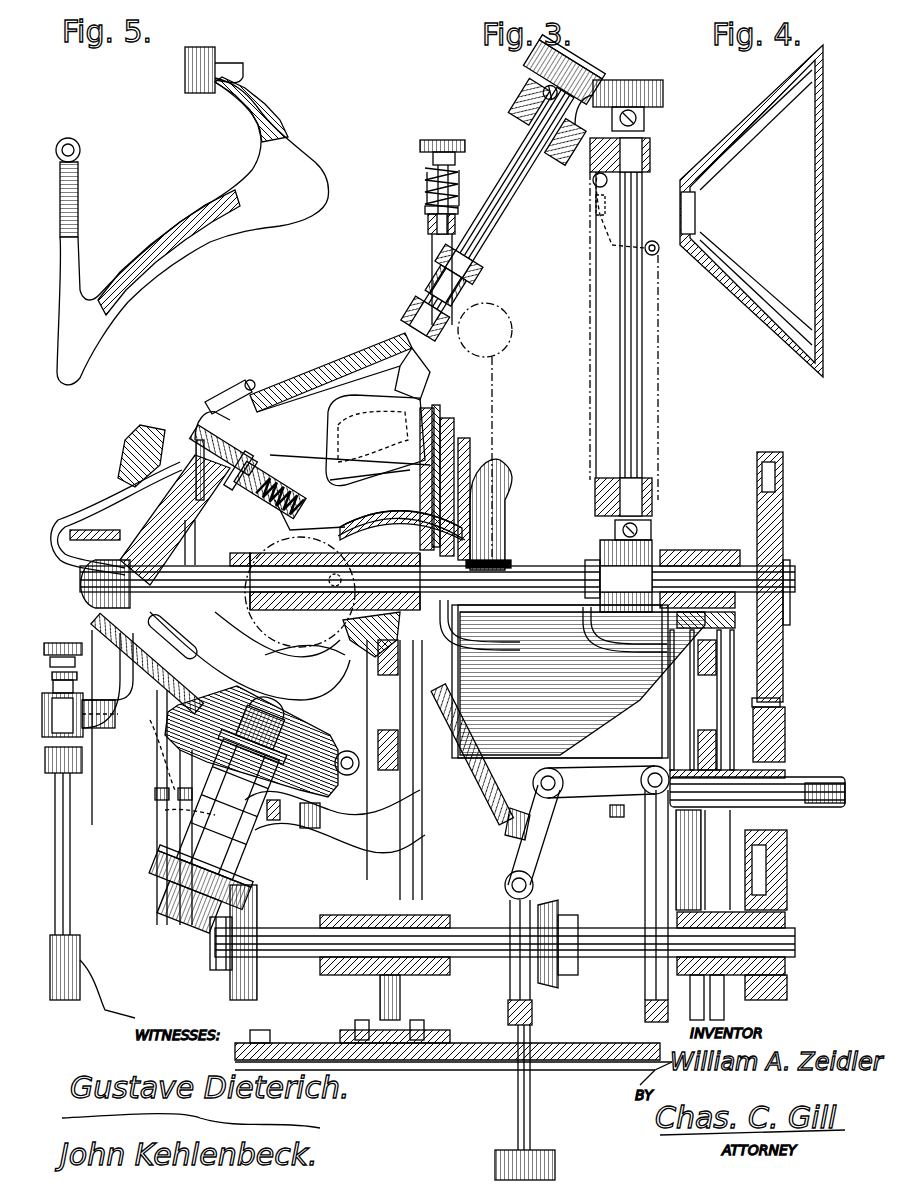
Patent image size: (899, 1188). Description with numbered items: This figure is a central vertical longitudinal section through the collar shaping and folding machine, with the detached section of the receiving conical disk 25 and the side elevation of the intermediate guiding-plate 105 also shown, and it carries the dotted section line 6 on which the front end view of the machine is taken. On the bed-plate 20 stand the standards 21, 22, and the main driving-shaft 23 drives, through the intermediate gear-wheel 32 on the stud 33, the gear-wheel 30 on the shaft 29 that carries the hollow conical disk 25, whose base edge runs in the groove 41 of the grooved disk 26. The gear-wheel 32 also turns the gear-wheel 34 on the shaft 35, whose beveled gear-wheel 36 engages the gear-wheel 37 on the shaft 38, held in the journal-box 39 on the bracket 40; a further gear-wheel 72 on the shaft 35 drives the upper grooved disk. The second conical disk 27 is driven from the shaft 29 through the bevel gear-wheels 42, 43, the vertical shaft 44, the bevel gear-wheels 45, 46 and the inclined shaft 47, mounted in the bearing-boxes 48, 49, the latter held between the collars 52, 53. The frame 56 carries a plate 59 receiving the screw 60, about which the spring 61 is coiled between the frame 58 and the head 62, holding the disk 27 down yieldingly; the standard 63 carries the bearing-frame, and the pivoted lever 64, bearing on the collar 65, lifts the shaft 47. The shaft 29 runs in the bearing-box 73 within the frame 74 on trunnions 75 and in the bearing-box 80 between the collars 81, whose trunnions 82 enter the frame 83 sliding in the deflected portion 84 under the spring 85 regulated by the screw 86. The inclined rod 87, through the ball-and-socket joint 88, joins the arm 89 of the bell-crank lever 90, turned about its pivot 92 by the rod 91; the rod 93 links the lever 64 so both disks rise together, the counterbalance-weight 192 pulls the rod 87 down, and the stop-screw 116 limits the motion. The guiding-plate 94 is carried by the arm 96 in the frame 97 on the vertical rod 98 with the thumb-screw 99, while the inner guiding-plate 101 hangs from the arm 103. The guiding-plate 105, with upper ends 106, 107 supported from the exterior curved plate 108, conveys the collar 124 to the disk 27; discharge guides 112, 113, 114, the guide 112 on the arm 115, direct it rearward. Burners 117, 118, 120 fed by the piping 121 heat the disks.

In FIG. 3, the bed-plate 20 is at (453, 1053).
In FIG. 3, the standard 21 is at (725, 1015).
In FIG. 3, the standard 22 is at (408, 998).
In FIG. 3, the main driving-shaft 23 is at (465, 820).
In FIG. 4, the conical disk 25 is at (751, 211).
In FIG. 3, the conical disk 25 is at (178, 487).
In FIG. 3, the grooved disk 26 is at (165, 740).
In FIG. 3, the conical disk 27 is at (340, 368).
In FIG. 3, the shaft 29 is at (535, 566).
In FIG. 3, the gear-wheel 30 is at (784, 512).
In FIG. 3, the gear-wheel 32 is at (788, 752).
In FIG. 3, the stud 33 is at (757, 788).
In FIG. 3, the gear-wheel 34 is at (790, 907).
In FIG. 3, the shaft 35 is at (620, 958).
In FIG. 3, the beveled gear-wheel 36 is at (262, 908).
In FIG. 3, the gear-wheel 37 is at (155, 862).
In FIG. 3, the shaft 38 is at (180, 905).
In FIG. 3, the journal-box 39 is at (165, 812).
In FIG. 3, the bracket 40 is at (335, 821).
In FIG. 3, the groove 41 is at (252, 756).
In FIG. 3, the bevel gear-wheel 42 is at (600, 548).
In FIG. 3, the bevel gear-wheel 43 is at (621, 529).
In FIG. 3, the vertical shaft 44 is at (621, 327).
In FIG. 3, the bevel gear-wheel 45 is at (663, 93).
In FIG. 3, the bevel gear-wheel 46 is at (548, 56).
In FIG. 3, the shaft 47 is at (505, 222).
In FIG. 3, the bearing-box 48 is at (556, 158).
In FIG. 3, the bearing-box 49 is at (478, 292).
In FIG. 3, the collar 52 is at (455, 333).
In FIG. 3, the collar 53 is at (495, 270).
In FIG. 3, the frame 56 is at (432, 250).
In FIG. 3, the frame 58 is at (428, 212).
In FIG. 3, the plate 59 is at (430, 230).
In FIG. 3, the screw 60 is at (425, 185).
In FIG. 3, the spring 61 is at (425, 198).
In FIG. 3, the head 62 is at (442, 144).
In FIG. 3, the standard 63 is at (590, 437).
In FIG. 3, the pivoted lever 64 is at (618, 208).
In FIG. 3, the collar 65 is at (529, 100).
In FIG. 3, the gear-wheel 72 is at (560, 910).
In FIG. 3, the bearing-box 73 is at (662, 548).
In FIG. 3, the frame 74 is at (718, 620).
In FIG. 3, the trunnions 75 is at (660, 622).
In FIG. 3, the bearing-box 80 is at (250, 656).
In FIG. 3, the collars 81 is at (328, 600).
In FIG. 3, the trunnions 82 is at (355, 570).
In FIG. 3, the frame 83 is at (345, 540).
In FIG. 3, the upper deflected portion 84 is at (280, 525).
In FIG. 3, the spring 85 is at (250, 505).
In FIG. 3, the screw 86 is at (240, 445).
In FIG. 3, the inclined rod 87 is at (490, 800).
In FIG. 3, the ball-and-socket joint 88 is at (512, 835).
In FIG. 3, the arm 89 is at (528, 863).
In FIG. 3, the bell-crank lever 90 is at (545, 828).
In FIG. 3, the rod 91 is at (645, 880).
In FIG. 3, the pivot 92 is at (555, 770).
In FIG. 3, the rod 93 is at (658, 255).
In FIG. 3, the guiding-plate 94 is at (165, 685).
In FIG. 3, the arm 96 is at (107, 680).
In FIG. 3, the frame 97 is at (84, 742).
In FIG. 3, the vertical rod 98 is at (76, 888).
In FIG. 3, the thumb-screw 99 is at (62, 698).
In FIG. 3, the inner guiding-plate 101 is at (375, 440).
In FIG. 3, the arm 103 is at (350, 472).
In FIG. 5, the guiding-plate 105 is at (236, 222).
In FIG. 5, the upper end 106 is at (85, 187).
In FIG. 3, the upper end 106 is at (201, 456).
In FIG. 5, the upper end 107 is at (219, 60).
In FIG. 3, the exterior curved plate 108 is at (455, 440).
In FIG. 3, the guide 112 is at (141, 447).
In FIG. 3, the guide 113 is at (95, 527).
In FIG. 3, the guide 114 is at (510, 512).
In FIG. 3, the arm 115 is at (116, 518).
In FIG. 3, the stop-screw 116 is at (617, 822).
In FIG. 3, the burner 117 is at (208, 542).
In FIG. 3, the burner 118 is at (250, 380).
In FIG. 3, the burner 120 is at (290, 811).
In FIG. 3, the piping 121 is at (348, 777).
In FIG. 3, the collar 124 is at (312, 546).
In FIG. 3, the counterbalance-weight 192 is at (555, 1163).
In FIG. 3, the axis line 6 is at (99, 727).